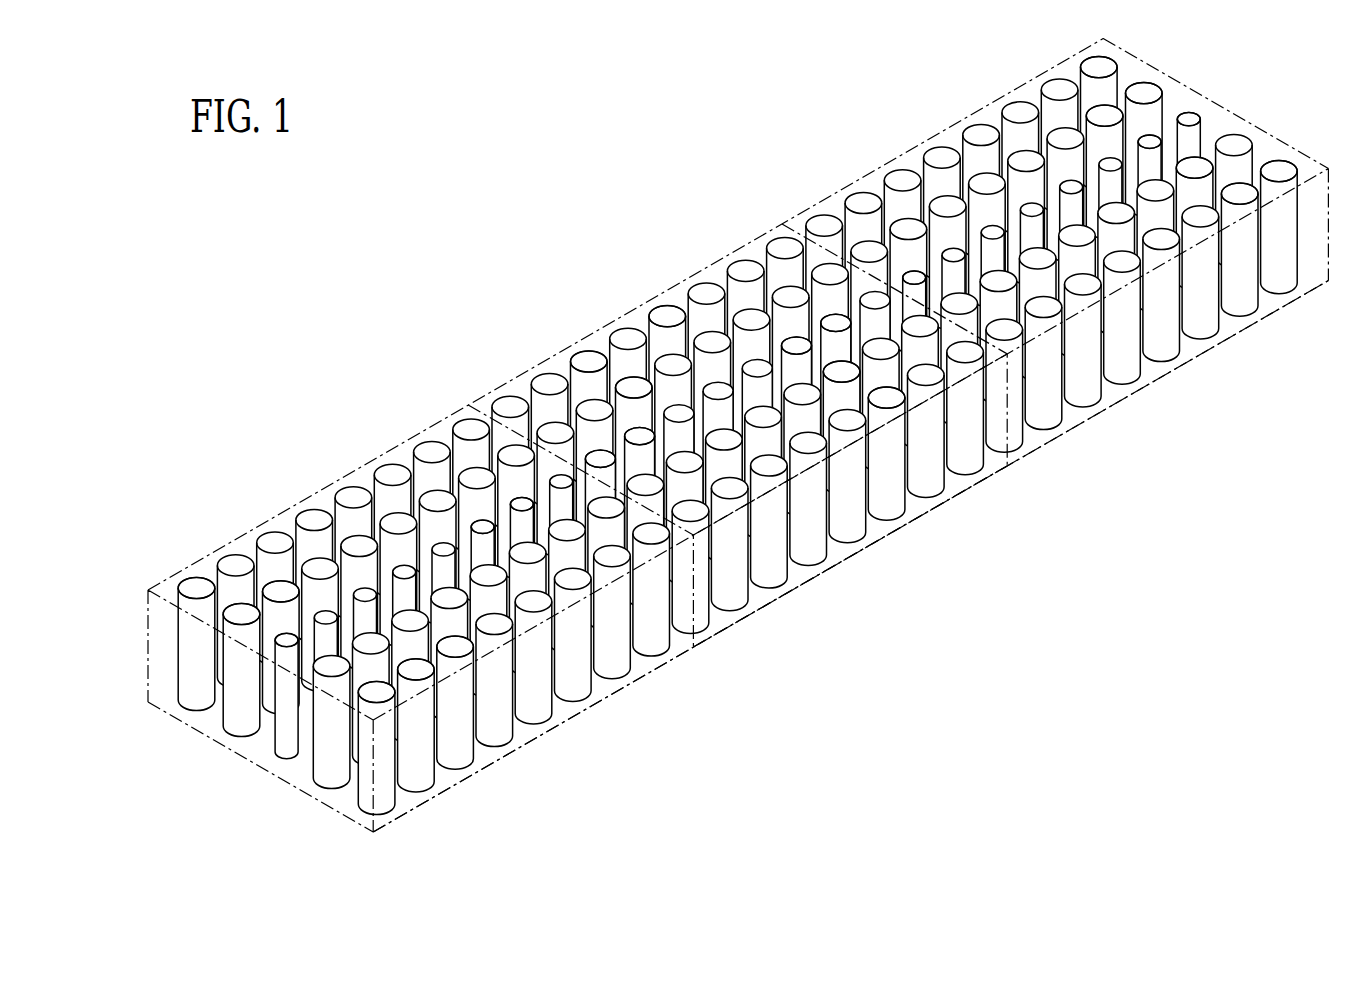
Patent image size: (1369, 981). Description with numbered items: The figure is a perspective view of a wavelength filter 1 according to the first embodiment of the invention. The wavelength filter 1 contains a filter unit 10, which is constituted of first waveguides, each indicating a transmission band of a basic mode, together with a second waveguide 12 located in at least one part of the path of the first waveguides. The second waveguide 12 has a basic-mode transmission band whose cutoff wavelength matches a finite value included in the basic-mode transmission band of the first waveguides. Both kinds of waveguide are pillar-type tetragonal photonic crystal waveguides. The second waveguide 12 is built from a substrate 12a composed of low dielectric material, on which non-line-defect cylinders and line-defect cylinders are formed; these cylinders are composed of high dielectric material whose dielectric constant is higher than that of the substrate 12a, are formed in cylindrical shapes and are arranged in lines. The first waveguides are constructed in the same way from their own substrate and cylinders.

The wavelength filter 1 is at (738, 436).
The filter unit 10 is at (740, 625).
The second waveguide 12 is at (815, 580).
The substrate 12a is at (852, 550).